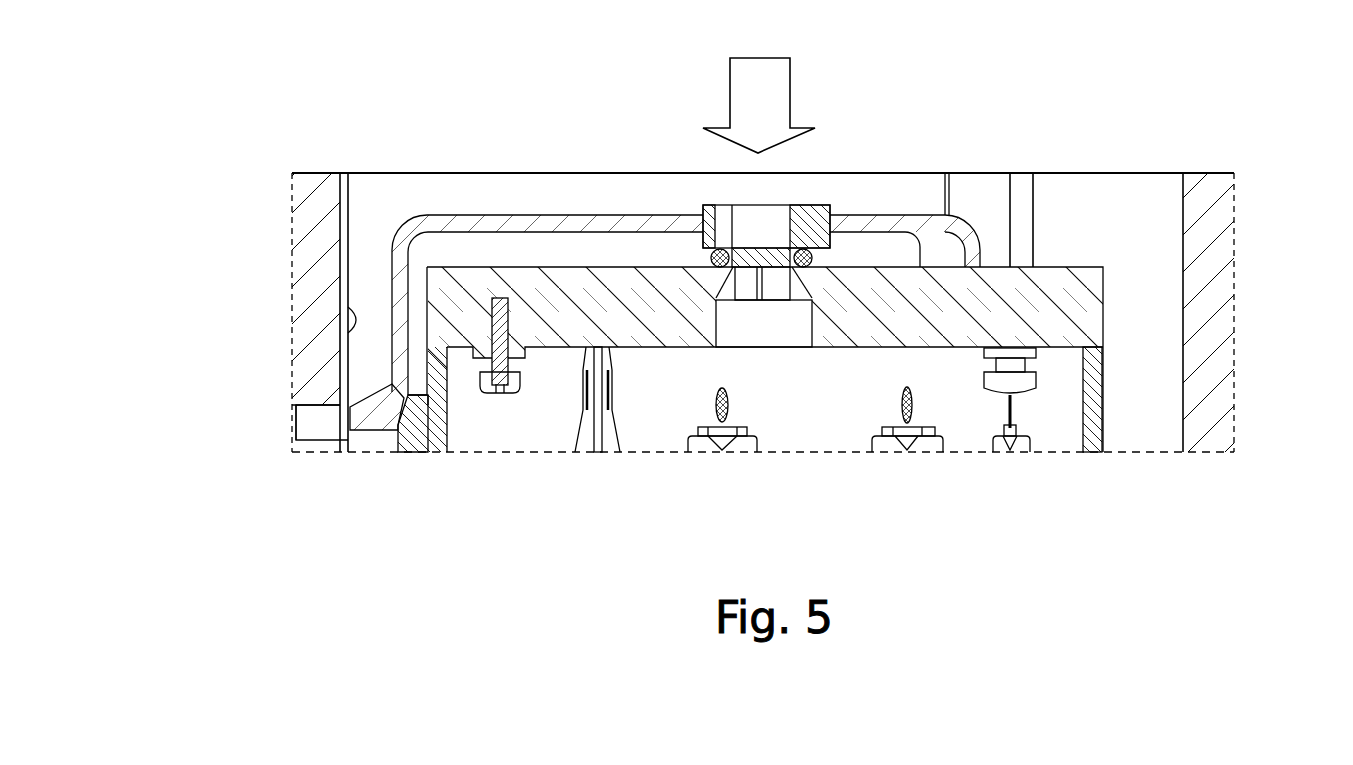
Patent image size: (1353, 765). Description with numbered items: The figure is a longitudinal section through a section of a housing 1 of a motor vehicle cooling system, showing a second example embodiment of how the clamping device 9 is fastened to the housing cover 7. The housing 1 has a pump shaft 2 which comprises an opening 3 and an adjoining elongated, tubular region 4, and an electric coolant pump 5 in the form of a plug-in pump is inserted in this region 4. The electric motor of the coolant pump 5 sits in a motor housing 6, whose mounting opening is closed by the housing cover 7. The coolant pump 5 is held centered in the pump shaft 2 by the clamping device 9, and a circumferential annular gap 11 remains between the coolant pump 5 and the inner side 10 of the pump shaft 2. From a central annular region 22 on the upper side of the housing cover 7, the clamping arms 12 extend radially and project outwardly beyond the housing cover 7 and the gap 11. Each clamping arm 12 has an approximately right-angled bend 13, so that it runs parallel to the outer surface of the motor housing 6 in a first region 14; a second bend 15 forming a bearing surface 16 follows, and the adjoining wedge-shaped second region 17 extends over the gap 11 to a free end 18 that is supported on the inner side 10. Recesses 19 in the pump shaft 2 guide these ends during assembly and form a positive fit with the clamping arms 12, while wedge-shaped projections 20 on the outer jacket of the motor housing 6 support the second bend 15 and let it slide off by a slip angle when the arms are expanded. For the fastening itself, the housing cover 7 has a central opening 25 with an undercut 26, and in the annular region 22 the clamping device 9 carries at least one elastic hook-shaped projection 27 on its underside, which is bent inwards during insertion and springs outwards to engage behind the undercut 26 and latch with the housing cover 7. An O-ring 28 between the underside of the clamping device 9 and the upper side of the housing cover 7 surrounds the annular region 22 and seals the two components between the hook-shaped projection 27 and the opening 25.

The housing 1 is at (310, 187).
The pump shaft 2 is at (348, 268).
The opening 3 is at (344, 186).
The tubular region 4 is at (352, 212).
The electric coolant pump 5 is at (1066, 224).
The motor housing 6 is at (1093, 374).
The housing cover 7 is at (1077, 302).
The clamping device 9 is at (814, 172).
The inner side 10 is at (346, 333).
The annular gap 11 is at (392, 226).
The clamping arm 12 is at (505, 213).
The right-angled bend 13 is at (968, 230).
The first region 14 is at (1005, 252).
The second bend 15 is at (405, 410).
The bearing surface 16 is at (420, 415).
The second region 17 is at (380, 415).
The free end 18 is at (330, 440).
The recess 19 is at (322, 408).
The wedge-shaped projection 20 is at (432, 400).
The central annular region 22 is at (826, 210).
The central opening 25 is at (714, 250).
The undercut 26 is at (742, 300).
The hook-shaped projection 27 is at (735, 288).
The O-ring 28 is at (812, 272).